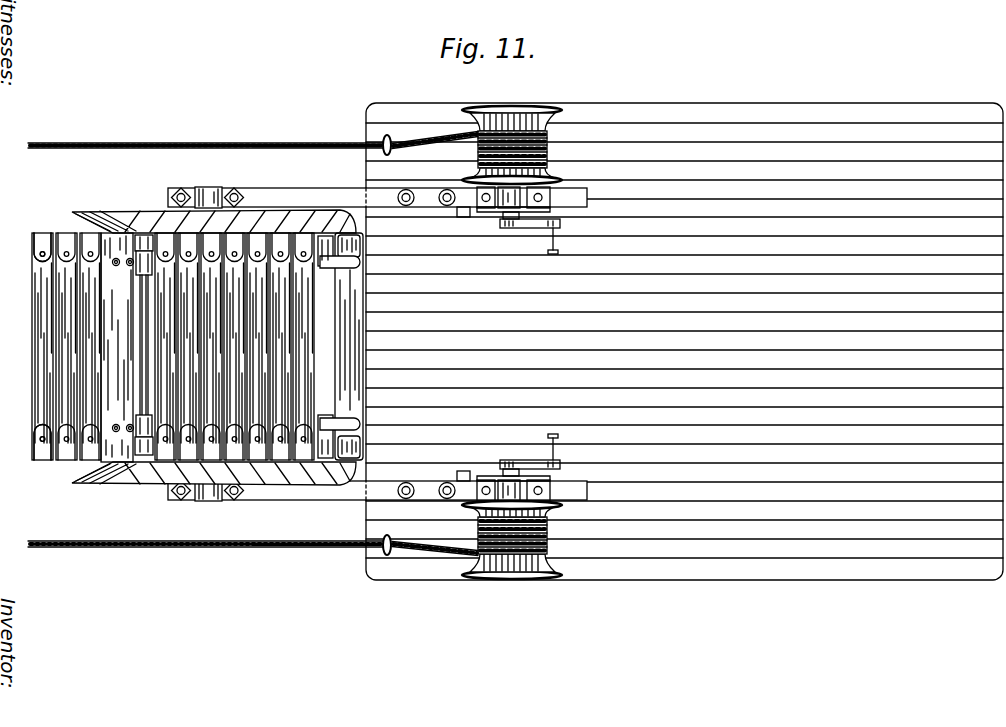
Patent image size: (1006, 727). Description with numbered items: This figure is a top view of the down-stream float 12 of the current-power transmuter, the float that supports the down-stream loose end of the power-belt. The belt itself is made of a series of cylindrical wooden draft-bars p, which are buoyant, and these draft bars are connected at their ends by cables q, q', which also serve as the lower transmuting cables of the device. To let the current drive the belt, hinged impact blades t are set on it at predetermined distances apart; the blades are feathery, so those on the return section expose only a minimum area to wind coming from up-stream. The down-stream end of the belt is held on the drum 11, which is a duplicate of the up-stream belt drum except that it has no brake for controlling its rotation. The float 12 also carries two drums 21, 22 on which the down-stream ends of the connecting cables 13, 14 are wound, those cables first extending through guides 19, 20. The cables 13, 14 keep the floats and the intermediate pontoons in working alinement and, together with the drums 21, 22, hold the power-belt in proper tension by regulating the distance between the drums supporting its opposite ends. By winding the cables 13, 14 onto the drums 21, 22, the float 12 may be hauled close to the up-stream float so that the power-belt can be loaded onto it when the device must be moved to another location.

The drum 11 is at (121, 224).
The down-stream float 12 is at (725, 112).
The cable 13 is at (178, 546).
The cable 14 is at (178, 144).
The guide 19 is at (382, 548).
The guide 20 is at (382, 143).
The drum 21 is at (512, 581).
The drum 22 is at (493, 108).
The draft-bar p is at (37, 283).
The cable q is at (28, 249).
The cable q' is at (27, 449).
The impact blade t is at (232, 347).